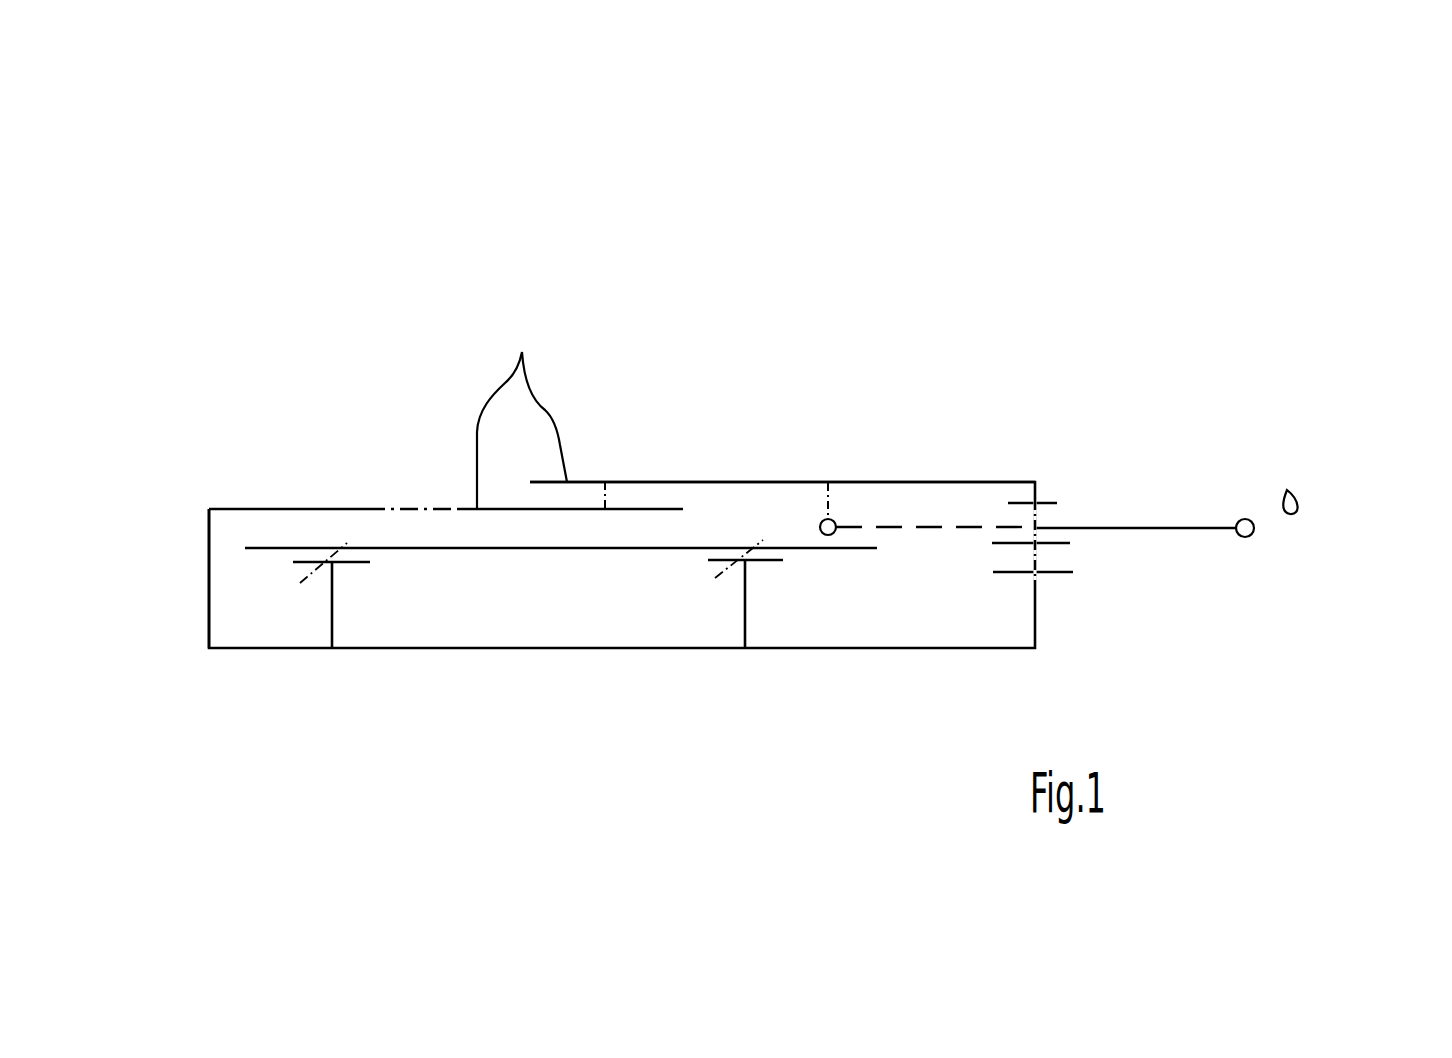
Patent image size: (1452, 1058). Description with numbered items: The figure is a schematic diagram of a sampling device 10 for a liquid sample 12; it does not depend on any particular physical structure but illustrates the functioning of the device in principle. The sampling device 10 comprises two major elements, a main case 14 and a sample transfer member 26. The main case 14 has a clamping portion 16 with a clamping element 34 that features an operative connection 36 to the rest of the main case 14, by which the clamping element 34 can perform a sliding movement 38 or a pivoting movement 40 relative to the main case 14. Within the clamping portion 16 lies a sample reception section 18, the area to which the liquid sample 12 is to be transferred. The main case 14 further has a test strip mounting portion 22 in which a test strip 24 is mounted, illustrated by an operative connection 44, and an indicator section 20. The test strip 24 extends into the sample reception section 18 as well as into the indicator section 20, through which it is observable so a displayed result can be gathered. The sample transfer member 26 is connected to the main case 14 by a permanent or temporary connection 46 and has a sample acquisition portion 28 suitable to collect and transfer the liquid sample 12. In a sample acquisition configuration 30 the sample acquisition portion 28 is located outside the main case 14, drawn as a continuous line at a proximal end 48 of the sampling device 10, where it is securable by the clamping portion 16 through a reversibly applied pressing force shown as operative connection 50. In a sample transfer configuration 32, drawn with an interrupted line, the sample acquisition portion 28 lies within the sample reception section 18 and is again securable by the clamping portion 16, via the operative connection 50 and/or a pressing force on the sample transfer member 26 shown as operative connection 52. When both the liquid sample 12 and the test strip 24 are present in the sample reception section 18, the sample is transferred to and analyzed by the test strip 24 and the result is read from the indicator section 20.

The sampling device 10 is at (917, 295).
The liquid sample 12 is at (1305, 483).
The main case 14 is at (92, 603).
The clamping portion 16 is at (873, 457).
The sample reception section 18 is at (803, 512).
The indicator section 20 is at (383, 492).
The test strip mounting portion 22 is at (608, 570).
The test strip 24 is at (682, 548).
The sample transfer member 26 is at (1095, 537).
The sample acquisition portion 28 is at (828, 536).
The sample acquisition configuration 30 is at (1245, 518).
The sample transfer configuration 32 is at (960, 548).
The clamping element 34 is at (913, 483).
The operative connection 36 is at (612, 497).
The sliding movement 38 is at (789, 472).
The pivoting movement 40 is at (1020, 416).
The operative connection 44 is at (283, 583).
The permanent or temporary connection 46 is at (1047, 552).
The proximal end 48 is at (1323, 526).
The operative connection 50 is at (1045, 516).
The operative connection 52 is at (838, 503).